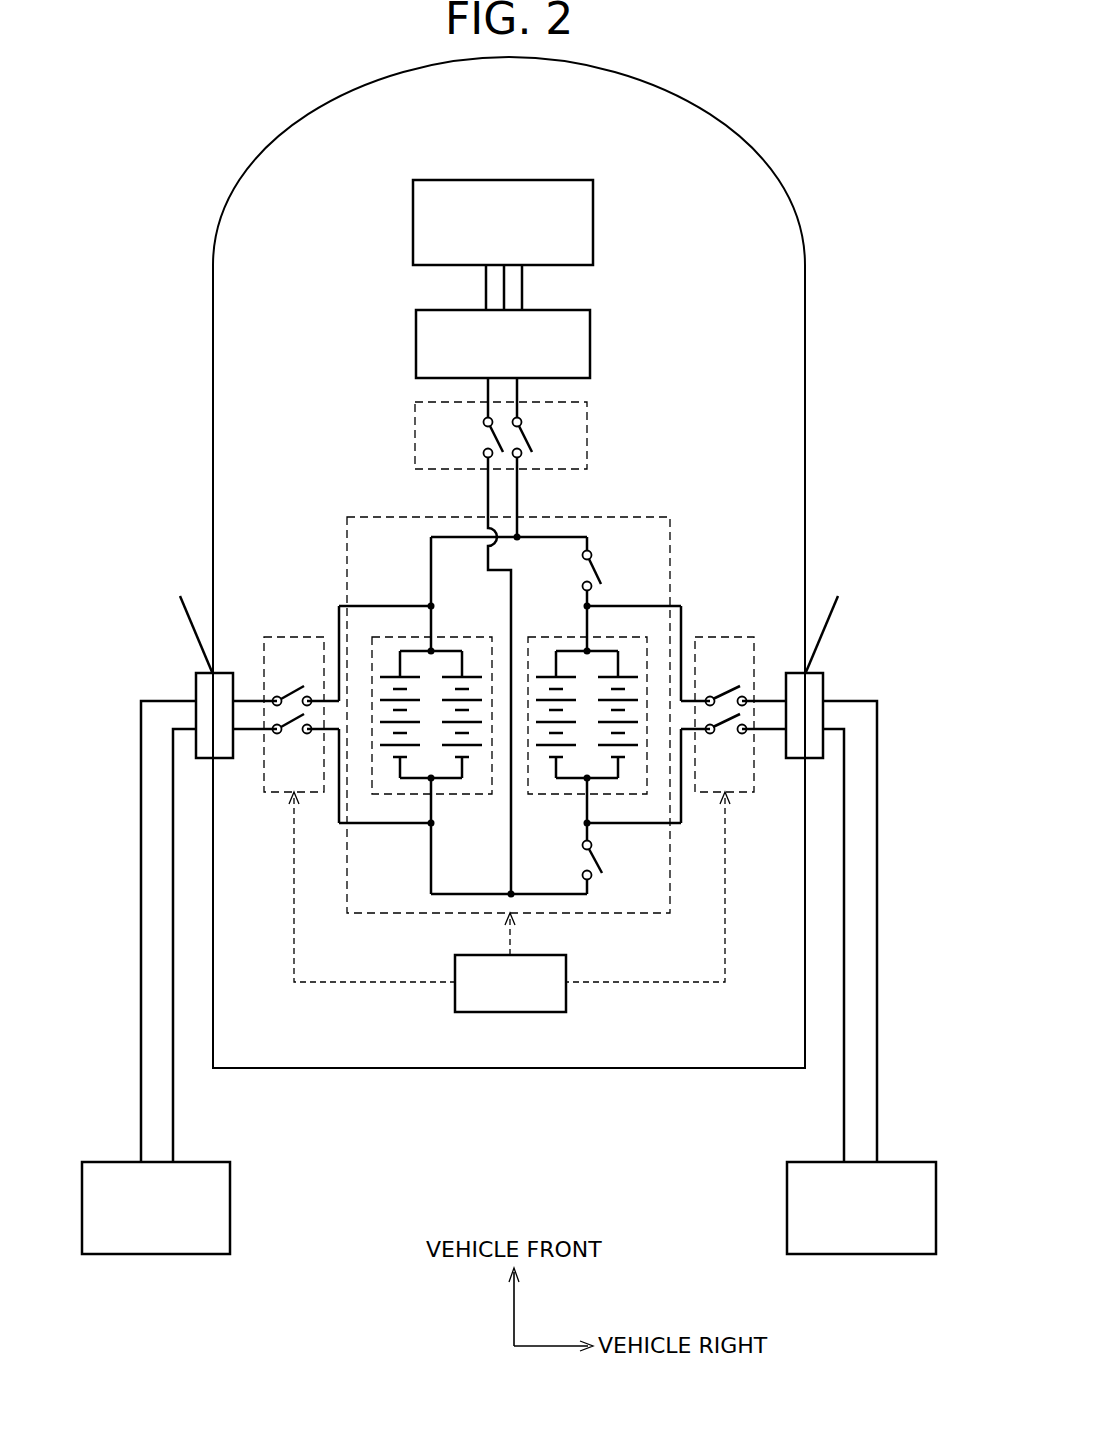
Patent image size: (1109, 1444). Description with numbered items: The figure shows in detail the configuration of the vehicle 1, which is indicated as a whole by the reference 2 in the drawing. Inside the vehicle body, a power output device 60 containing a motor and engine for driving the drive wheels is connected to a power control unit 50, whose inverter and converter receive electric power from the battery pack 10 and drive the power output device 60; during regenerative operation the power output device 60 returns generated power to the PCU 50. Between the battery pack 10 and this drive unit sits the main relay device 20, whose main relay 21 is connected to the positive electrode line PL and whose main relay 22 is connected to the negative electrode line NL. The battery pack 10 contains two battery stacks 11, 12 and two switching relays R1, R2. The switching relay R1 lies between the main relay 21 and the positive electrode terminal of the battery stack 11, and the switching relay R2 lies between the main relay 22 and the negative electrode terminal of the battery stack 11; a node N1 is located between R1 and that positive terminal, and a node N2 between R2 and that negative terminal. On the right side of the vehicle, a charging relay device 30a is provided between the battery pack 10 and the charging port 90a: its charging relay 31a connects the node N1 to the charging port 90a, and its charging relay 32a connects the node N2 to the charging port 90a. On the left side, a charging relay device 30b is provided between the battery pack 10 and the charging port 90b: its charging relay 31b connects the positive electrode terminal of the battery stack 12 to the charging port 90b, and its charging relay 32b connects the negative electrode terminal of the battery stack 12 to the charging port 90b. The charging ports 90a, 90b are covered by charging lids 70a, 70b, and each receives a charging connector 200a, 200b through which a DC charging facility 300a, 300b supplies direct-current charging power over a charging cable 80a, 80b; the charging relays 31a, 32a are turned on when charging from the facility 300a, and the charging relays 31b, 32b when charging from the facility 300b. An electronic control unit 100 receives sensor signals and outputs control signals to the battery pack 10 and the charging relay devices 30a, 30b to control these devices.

The vehicle 1 is at (687, 97).
The vehicle 2 is at (796, 139).
The battery pack 10 is at (628, 517).
The battery stack 11 is at (620, 637).
The battery stack 12 is at (405, 637).
The main relay device 20 is at (534, 423).
The main relay 21 is at (524, 432).
The main relay 22 is at (483, 438).
The charging relay device 30a is at (724, 689).
The charging relay device 30b is at (294, 689).
The charging relay 31a is at (718, 686).
The charging relay 31b is at (299, 685).
The charging relay 32a is at (727, 742).
The charging relay 32b is at (297, 742).
The power control unit 50 is at (590, 343).
The power output device 60 is at (593, 222).
The charging lid 70a is at (838, 612).
The charging lid 70b is at (182, 609).
The charging cable 80a is at (878, 835).
The charging cable 80b is at (141, 835).
The charging port 90a is at (787, 673).
The charging port 90b is at (232, 673).
The electronic control unit 100 is at (515, 1012).
The charging connector 200a is at (822, 676).
The charging connector 200b is at (197, 676).
The DC charging facility 300a is at (898, 1162).
The DC charging facility 300b is at (195, 1162).
The negative electrode line NL is at (486, 497).
The positive electrode line PL is at (520, 501).
The switching relay R1 is at (600, 575).
The switching relay R2 is at (603, 862).
The node N1 is at (563, 606).
The node N2 is at (563, 824).